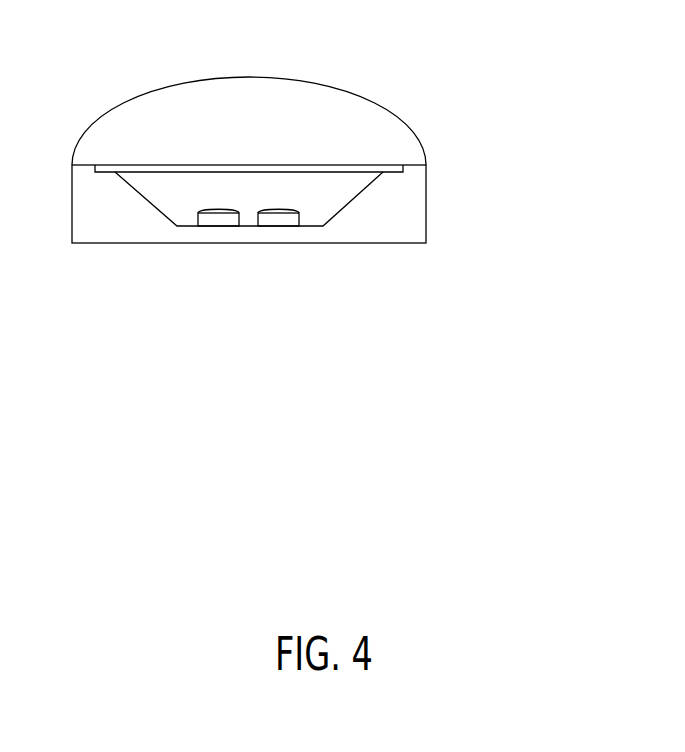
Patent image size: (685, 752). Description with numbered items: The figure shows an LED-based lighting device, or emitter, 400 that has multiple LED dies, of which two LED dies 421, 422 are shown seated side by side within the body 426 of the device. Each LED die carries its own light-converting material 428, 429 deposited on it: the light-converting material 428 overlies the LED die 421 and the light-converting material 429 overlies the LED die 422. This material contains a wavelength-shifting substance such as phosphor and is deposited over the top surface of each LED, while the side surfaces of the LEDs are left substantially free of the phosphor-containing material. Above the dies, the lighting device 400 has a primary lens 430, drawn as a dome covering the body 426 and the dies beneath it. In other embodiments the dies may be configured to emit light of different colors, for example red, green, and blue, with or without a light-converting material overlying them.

The LED-based lighting device 400 is at (476, 60).
The primary lens 430 is at (271, 131).
The housing body 426 is at (393, 232).
The LED die 421 is at (222, 219).
The LED die 422 is at (275, 219).
The light-converting material 428 is at (225, 209).
The light-converting material 429 is at (273, 209).